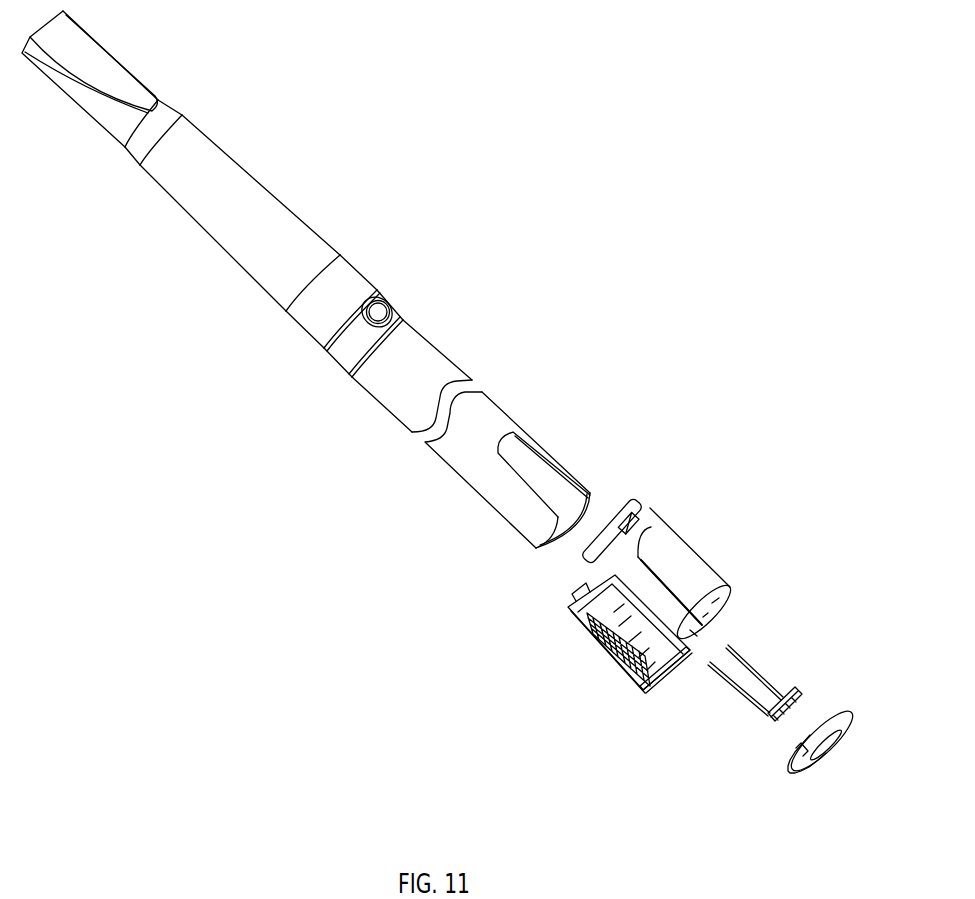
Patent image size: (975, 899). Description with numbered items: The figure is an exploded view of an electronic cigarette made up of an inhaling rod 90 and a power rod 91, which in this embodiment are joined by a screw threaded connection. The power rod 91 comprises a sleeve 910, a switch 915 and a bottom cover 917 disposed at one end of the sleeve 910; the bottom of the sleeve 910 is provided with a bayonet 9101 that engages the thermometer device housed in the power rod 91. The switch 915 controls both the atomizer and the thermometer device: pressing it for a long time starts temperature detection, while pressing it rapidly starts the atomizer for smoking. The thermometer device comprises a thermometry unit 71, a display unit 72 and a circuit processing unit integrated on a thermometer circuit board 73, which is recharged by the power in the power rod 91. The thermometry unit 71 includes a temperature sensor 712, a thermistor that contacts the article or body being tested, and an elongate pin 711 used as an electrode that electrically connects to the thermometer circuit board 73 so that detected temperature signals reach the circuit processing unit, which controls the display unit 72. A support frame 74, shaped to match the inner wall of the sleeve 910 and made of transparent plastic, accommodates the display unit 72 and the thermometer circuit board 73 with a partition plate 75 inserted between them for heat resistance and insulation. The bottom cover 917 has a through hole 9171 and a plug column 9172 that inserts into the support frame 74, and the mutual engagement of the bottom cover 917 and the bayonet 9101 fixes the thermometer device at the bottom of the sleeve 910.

The inhaling rod 90 is at (233, 226).
The power rod 91 is at (398, 390).
The switch 915 is at (380, 308).
The sleeve 910 is at (500, 425).
The bayonet 9101 is at (545, 468).
The support frame 74 is at (663, 545).
The thermometer circuit board 73 is at (567, 608).
The partition plate 75 is at (595, 625).
The display unit 72 is at (663, 648).
The thermometry unit 71 is at (711, 717).
The pin 711 is at (738, 688).
The temperature sensor 712 is at (773, 720).
The bottom cover 917 is at (765, 775).
The plug column 9172 is at (797, 750).
The through hole 9171 is at (807, 770).